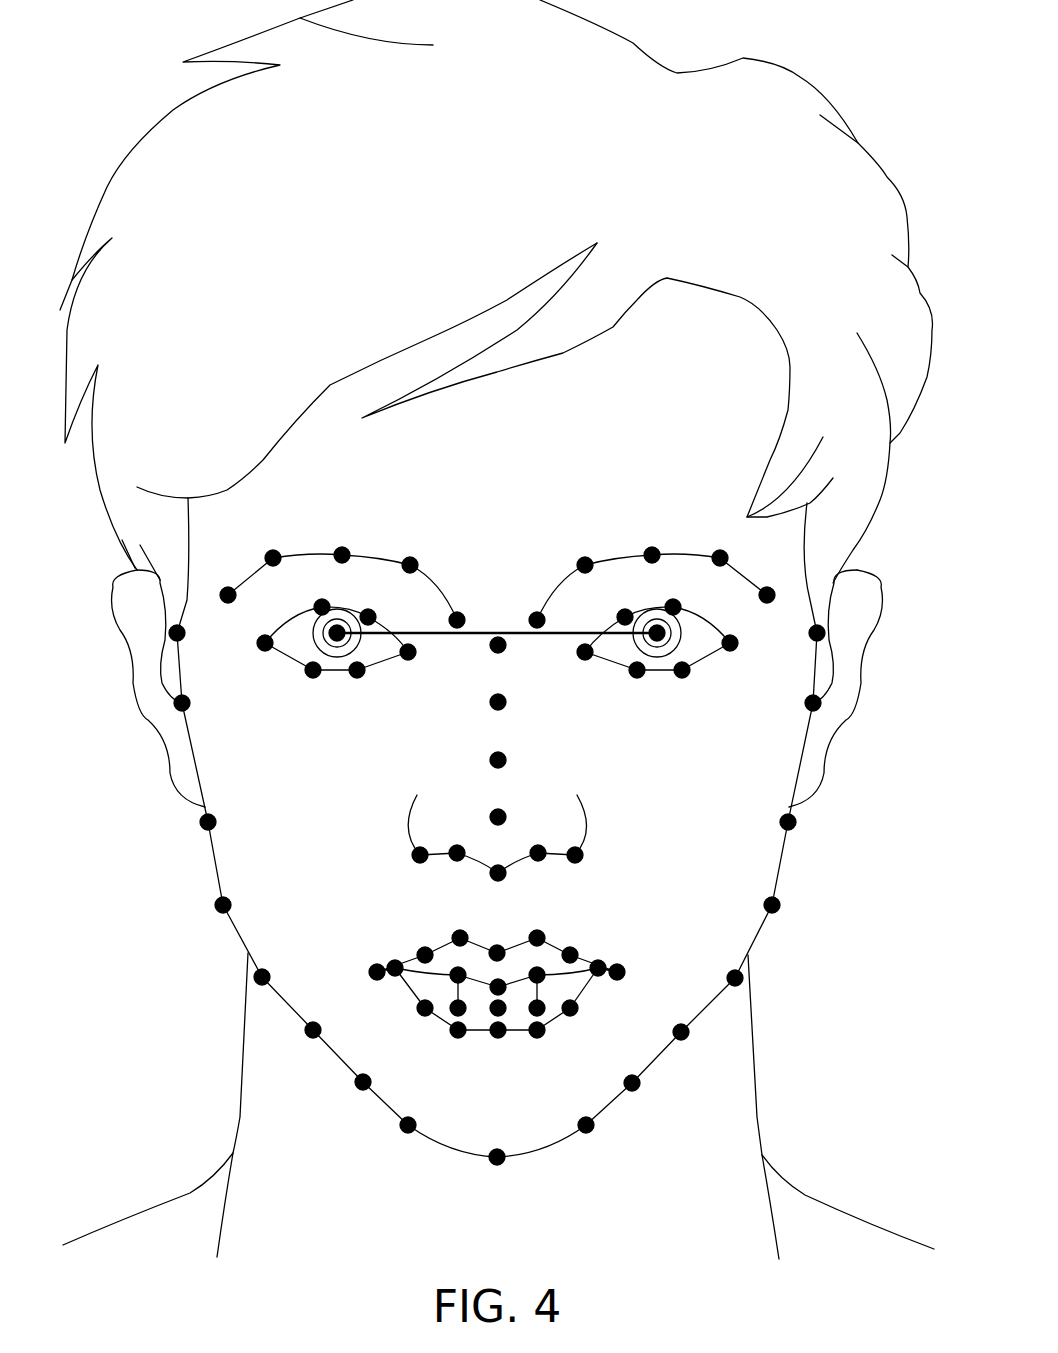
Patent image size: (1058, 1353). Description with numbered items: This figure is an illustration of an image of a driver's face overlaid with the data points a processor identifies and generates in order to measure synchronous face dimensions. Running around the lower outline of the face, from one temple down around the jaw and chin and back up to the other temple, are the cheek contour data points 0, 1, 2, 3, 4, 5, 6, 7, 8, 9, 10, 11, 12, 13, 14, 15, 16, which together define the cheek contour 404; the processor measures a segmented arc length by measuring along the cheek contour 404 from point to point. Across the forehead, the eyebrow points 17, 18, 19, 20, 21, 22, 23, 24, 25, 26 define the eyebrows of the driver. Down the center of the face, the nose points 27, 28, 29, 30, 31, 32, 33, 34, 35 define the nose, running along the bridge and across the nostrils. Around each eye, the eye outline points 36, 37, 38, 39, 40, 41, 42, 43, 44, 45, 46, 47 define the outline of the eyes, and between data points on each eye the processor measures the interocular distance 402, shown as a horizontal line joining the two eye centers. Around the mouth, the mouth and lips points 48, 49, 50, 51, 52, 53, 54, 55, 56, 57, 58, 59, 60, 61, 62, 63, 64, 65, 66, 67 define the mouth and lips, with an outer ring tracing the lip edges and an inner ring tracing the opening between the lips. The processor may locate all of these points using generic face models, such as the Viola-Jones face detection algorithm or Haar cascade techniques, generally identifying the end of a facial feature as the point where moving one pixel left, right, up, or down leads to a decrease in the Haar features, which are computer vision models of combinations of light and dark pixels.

The data point 0 is at (182, 621).
The data point 1 is at (187, 691).
The data point 2 is at (213, 810).
The data point 3 is at (228, 893).
The data point 4 is at (266, 965).
The data point 5 is at (318, 1018).
The data point 6 is at (369, 1070).
The data point 7 is at (413, 1113).
The data point 8 is at (502, 1145).
The data point 9 is at (582, 1113).
The data point 10 is at (623, 1070).
The data point 11 is at (673, 1019).
The data point 12 is at (727, 965).
The data point 13 is at (763, 893).
The data point 14 is at (778, 810).
The data point 15 is at (804, 691).
The data point 16 is at (825, 621).
The eyebrow point 17 is at (237, 581).
The eyebrow point 18 is at (280, 547).
The eyebrow point 19 is at (349, 543).
The eyebrow point 20 is at (417, 553).
The eyebrow point 21 is at (466, 608).
The eyebrow point 22 is at (529, 608).
The eyebrow point 23 is at (577, 553).
The eyebrow point 24 is at (645, 543).
The eyebrow point 25 is at (713, 547).
The eyebrow point 26 is at (758, 581).
The nose point 27 is at (510, 649).
The nose point 28 is at (505, 690).
The nose point 29 is at (505, 748).
The nose point 30 is at (505, 805).
The nose point 31 is at (428, 843).
The nose point 32 is at (463, 841).
The nose point 33 is at (497, 861).
The nose point 34 is at (531, 841).
The nose point 35 is at (566, 843).
The eye outline point 36 is at (273, 632).
The eye outline point 37 is at (329, 595).
The eye outline point 38 is at (376, 605).
The eye outline point 39 is at (416, 665).
The eye outline point 40 is at (349, 683).
The eye outline point 41 is at (306, 683).
The eye outline point 42 is at (577, 665).
The eye outline point 43 is at (617, 605).
The eye outline point 44 is at (665, 595).
The eye outline point 45 is at (721, 632).
The eye outline point 46 is at (690, 683).
The eye outline point 47 is at (645, 683).
The mouth and lips point 48 is at (370, 960).
The mouth and lips point 49 is at (417, 943).
The mouth and lips point 50 is at (452, 926).
The mouth and lips point 51 is at (490, 942).
The mouth and lips point 52 is at (544, 926).
The mouth and lips point 53 is at (577, 943).
The mouth and lips point 54 is at (626, 960).
The mouth and lips point 55 is at (576, 1020).
The mouth and lips point 56 is at (545, 1043).
The mouth and lips point 57 is at (490, 1043).
The mouth and lips point 58 is at (450, 1043).
The mouth and lips point 59 is at (418, 1020).
The mouth and lips point 60 is at (397, 980).
The mouth and lips point 61 is at (468, 965).
The mouth and lips point 62 is at (508, 977).
The mouth and lips point 63 is at (546, 964).
The mouth and lips point 64 is at (595, 980).
The mouth and lips point 65 is at (547, 998).
The mouth and lips point 66 is at (485, 1008).
The mouth and lips point 67 is at (448, 998).
The interocular distance 402 is at (498, 633).
The cheek contour 404 is at (825, 633).